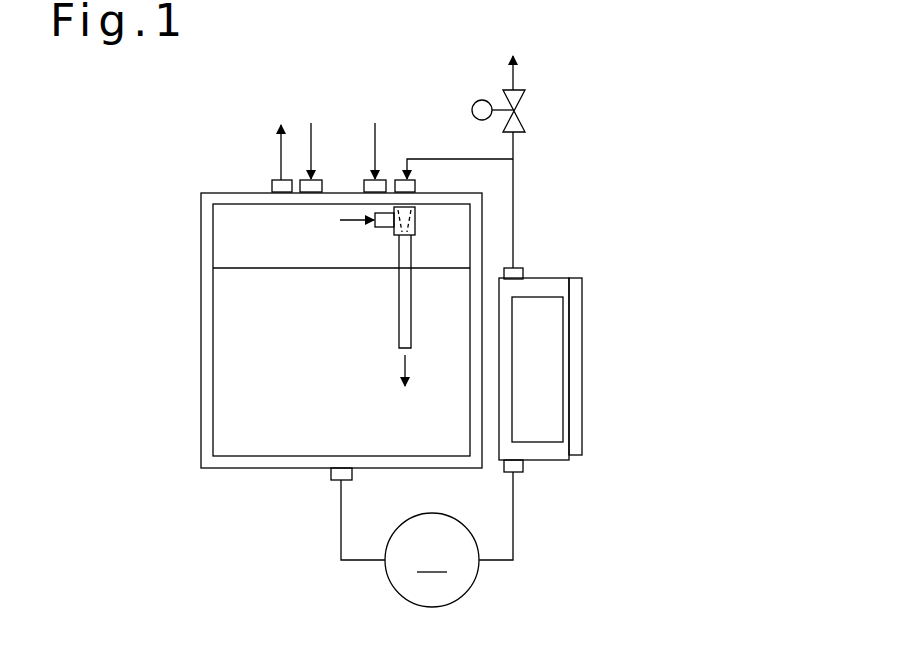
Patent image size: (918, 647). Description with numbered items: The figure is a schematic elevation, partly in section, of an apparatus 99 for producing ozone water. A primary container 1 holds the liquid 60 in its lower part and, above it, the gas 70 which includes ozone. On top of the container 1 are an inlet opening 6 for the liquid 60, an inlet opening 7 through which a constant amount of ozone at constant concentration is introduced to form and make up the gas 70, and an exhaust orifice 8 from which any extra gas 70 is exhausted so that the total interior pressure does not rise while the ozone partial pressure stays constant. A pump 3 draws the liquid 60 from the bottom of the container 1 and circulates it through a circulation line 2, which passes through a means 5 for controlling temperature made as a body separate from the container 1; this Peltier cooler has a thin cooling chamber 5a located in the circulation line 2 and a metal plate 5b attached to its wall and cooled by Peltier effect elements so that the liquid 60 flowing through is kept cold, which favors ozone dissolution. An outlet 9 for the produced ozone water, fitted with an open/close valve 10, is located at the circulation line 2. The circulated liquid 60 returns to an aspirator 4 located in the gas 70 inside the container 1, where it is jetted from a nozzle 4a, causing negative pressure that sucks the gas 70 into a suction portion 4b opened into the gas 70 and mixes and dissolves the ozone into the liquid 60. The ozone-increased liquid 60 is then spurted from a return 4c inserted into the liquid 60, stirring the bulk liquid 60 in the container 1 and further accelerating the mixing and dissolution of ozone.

The apparatus 99 is at (198, 191).
The primary container 1 is at (207, 317).
The gas 70 is at (218, 238).
The liquid 60 is at (218, 420).
The exhaust orifice 8 is at (272, 190).
The inlet opening for the gas 7 is at (322, 190).
The inlet opening for the liquid 6 is at (387, 190).
The nozzle 4a is at (419, 212).
The aspirator 4 is at (415, 229).
The suction portion 4b is at (394, 230).
The return 4c is at (402, 340).
The outlet 9 is at (515, 77).
The open/close valve 10 is at (518, 118).
The means for controlling temperature 5 is at (558, 458).
The cooling chamber 5a is at (558, 323).
The metal plate 5b is at (575, 405).
The pump 3 is at (432, 560).
The circulation line 2 is at (515, 555).